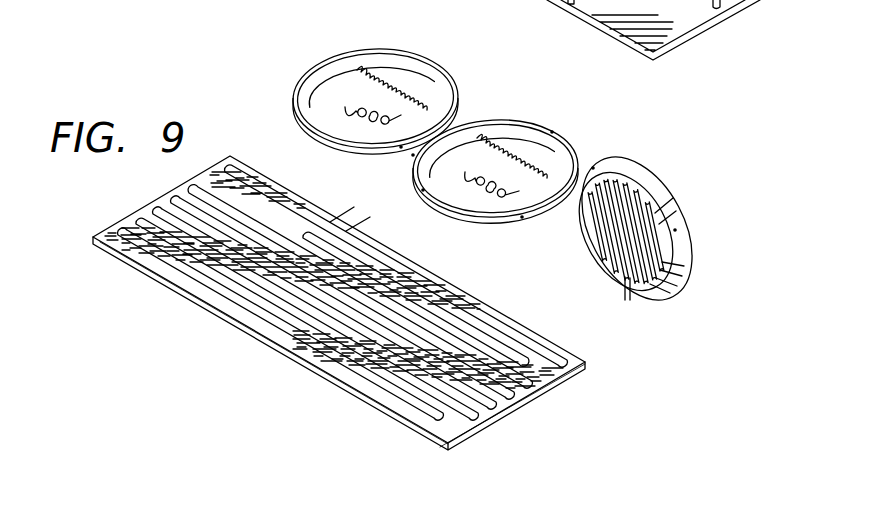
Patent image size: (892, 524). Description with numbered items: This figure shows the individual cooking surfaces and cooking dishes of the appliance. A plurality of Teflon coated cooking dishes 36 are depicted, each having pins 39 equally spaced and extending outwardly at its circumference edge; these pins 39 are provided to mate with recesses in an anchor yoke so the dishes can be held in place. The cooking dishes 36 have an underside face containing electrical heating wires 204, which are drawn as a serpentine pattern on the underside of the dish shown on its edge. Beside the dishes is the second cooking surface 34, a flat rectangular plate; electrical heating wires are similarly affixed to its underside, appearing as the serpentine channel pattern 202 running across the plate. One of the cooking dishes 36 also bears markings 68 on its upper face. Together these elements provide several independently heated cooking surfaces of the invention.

The second cooking surface 34 is at (233, 318).
The serpentine channels 202 is at (487, 347).
The Teflon coated cooking dish 36 is at (403, 73).
The pin 39 is at (297, 87).
The handwritten text 68 is at (347, 102).
The electrical heating wires 204 is at (628, 298).